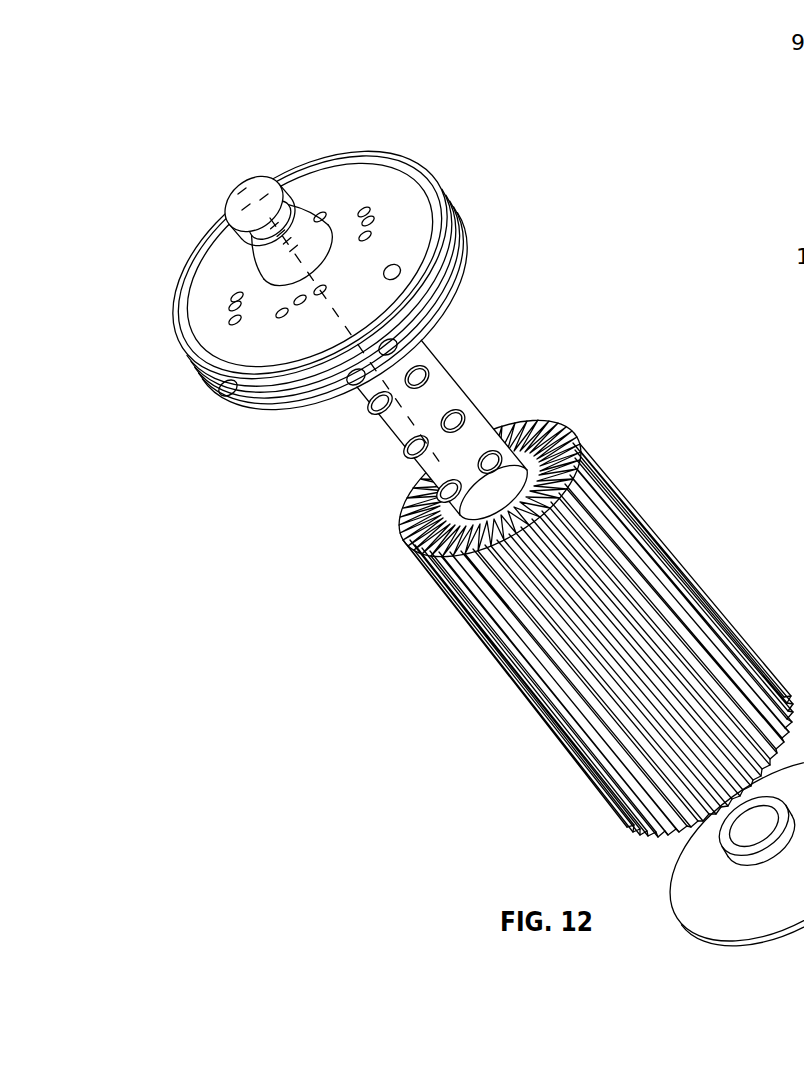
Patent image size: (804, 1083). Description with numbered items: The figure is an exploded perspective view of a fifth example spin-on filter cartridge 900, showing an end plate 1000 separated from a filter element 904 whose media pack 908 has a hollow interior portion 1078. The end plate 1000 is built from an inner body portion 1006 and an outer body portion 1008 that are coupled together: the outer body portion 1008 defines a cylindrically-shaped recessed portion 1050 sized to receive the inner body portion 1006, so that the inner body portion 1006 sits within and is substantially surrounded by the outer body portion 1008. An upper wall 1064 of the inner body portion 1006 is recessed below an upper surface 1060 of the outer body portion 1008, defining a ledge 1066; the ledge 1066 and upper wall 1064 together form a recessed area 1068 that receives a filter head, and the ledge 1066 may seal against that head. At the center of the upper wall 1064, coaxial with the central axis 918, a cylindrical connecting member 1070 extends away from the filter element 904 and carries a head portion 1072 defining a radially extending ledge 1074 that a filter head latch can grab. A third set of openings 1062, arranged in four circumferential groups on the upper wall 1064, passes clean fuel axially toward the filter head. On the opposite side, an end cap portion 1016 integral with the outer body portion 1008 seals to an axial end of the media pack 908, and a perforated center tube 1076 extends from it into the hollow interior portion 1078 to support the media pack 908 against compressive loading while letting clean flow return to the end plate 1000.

The spin-on filter cartridge 900 is at (573, 263).
The filter element 904 is at (670, 510).
The media pack 908 is at (495, 659).
The end plate 1000 is at (455, 135).
The inner body portion 1006 is at (372, 192).
The outer body portion 1008 is at (183, 312).
The central axis 918 is at (224, 178).
The recessed portion 1050 is at (240, 258).
The upper surface 1060 is at (180, 345).
The third set of openings 1062 is at (367, 237).
The upper wall 1064 is at (340, 192).
The ledge 1066 is at (213, 277).
The recessed area 1068 is at (265, 322).
The connecting member 1070 is at (290, 238).
The head portion 1072 is at (283, 197).
The ledge 1074 is at (264, 242).
The center tube 1076 is at (470, 445).
The hollow interior portion 1078 is at (495, 503).
The end cap portion 1016 is at (242, 420).